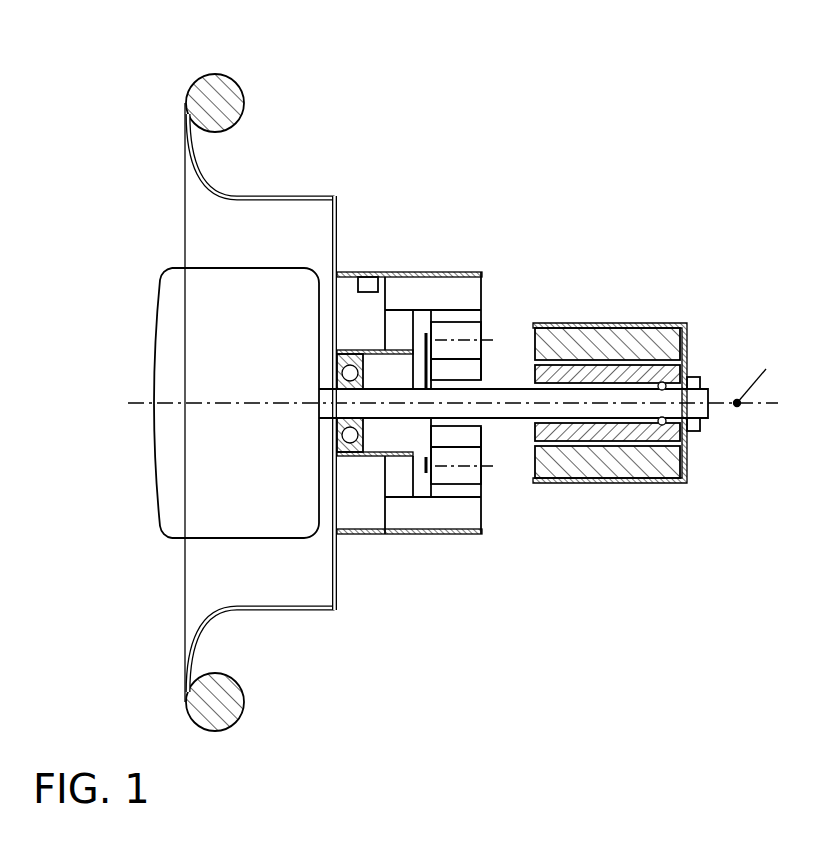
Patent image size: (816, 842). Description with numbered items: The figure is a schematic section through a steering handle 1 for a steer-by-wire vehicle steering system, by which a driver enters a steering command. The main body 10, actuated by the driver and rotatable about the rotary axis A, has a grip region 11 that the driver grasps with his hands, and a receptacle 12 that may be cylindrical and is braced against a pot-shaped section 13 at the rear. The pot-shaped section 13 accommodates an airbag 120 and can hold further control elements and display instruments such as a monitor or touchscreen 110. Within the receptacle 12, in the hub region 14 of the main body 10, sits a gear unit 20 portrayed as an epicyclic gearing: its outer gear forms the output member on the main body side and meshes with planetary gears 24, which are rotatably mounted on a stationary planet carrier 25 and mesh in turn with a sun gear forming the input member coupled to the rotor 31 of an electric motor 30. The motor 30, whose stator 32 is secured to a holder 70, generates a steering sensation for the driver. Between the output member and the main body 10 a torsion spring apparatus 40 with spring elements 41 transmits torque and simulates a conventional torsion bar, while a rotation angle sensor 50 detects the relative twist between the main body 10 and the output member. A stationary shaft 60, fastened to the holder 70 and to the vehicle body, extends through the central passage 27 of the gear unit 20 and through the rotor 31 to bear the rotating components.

The steering handle 1 is at (150, 184).
The main body 10 is at (277, 198).
The grip region 11 is at (205, 92).
The receptacle 12 is at (422, 274).
The pot-shaped section 13 is at (312, 608).
The hub region 14 is at (352, 523).
The gear unit 20 is at (464, 297).
The planetary gear 24 is at (468, 330).
The planet carrier 25 is at (427, 458).
The central passage 27 is at (477, 389).
The electric motor 30 is at (637, 466).
The rotor 31 is at (655, 436).
The stator 32 is at (605, 466).
The torsion spring apparatus 40 is at (397, 333).
The spring element 41 is at (395, 470).
The rotation angle sensor 50 is at (367, 282).
The stationary shaft 60 is at (698, 410).
The holder 70 is at (653, 324).
The monitor or touchscreen 110 is at (158, 353).
The airbag 120 is at (210, 430).